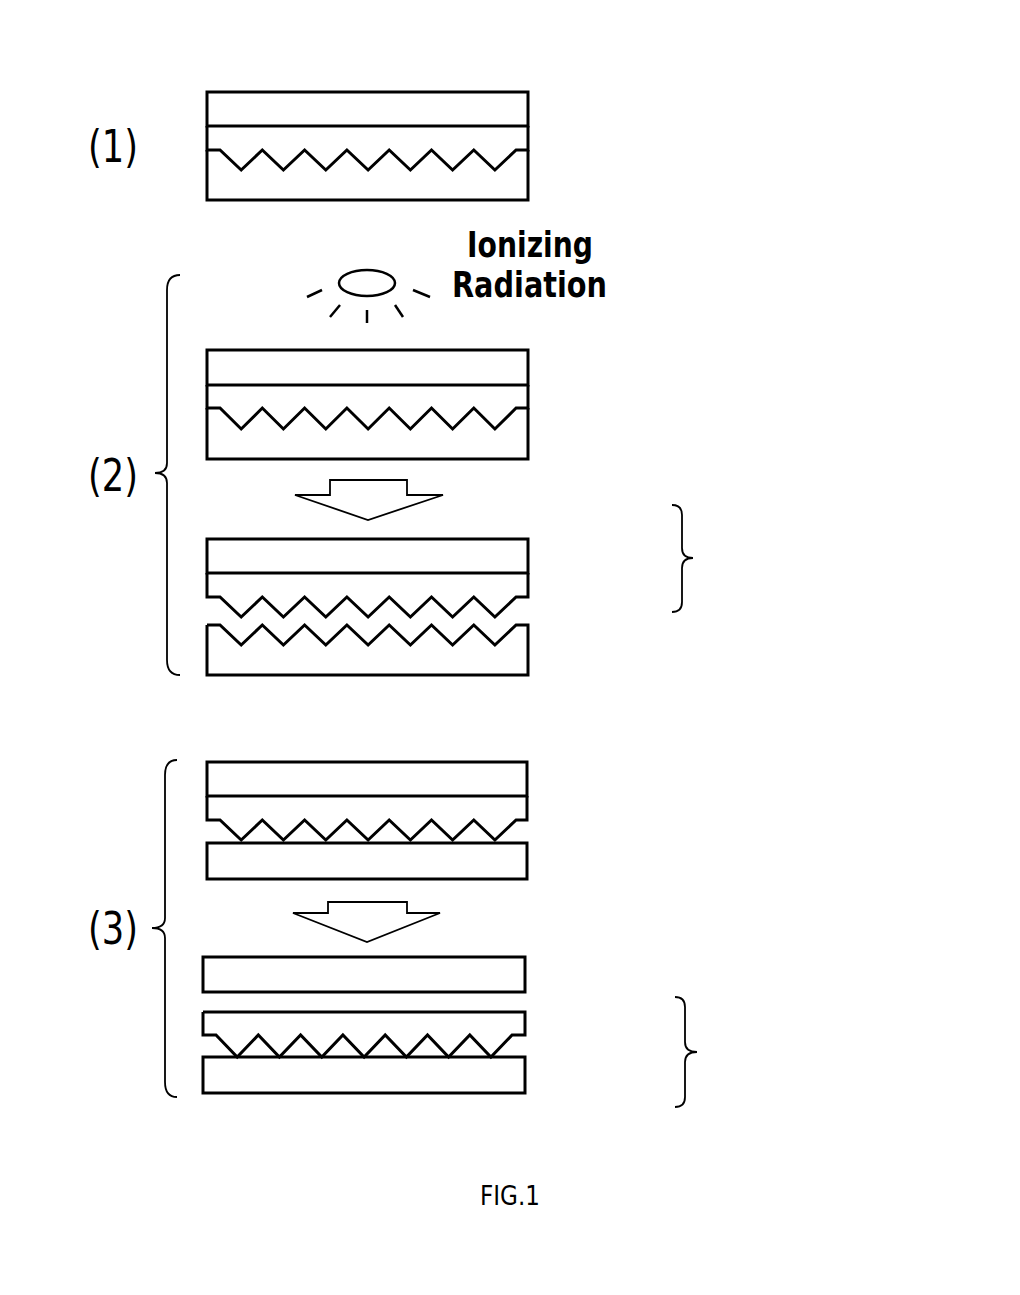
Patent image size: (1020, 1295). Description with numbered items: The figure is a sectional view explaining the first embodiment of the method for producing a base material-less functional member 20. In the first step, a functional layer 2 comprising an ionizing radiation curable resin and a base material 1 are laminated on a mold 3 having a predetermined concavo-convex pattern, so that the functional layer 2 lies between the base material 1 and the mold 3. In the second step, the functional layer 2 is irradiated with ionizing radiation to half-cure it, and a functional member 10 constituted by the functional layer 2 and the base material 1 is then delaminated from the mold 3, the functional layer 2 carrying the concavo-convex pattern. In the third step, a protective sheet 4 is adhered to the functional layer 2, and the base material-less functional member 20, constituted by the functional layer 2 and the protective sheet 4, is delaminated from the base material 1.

The base material 1 is at (503, 110).
The functional layer 2 is at (503, 138).
The mold 3 is at (503, 178).
The protective sheet 4 is at (510, 860).
The functional member 10 is at (719, 558).
The base material-less functional member 20 is at (724, 1052).